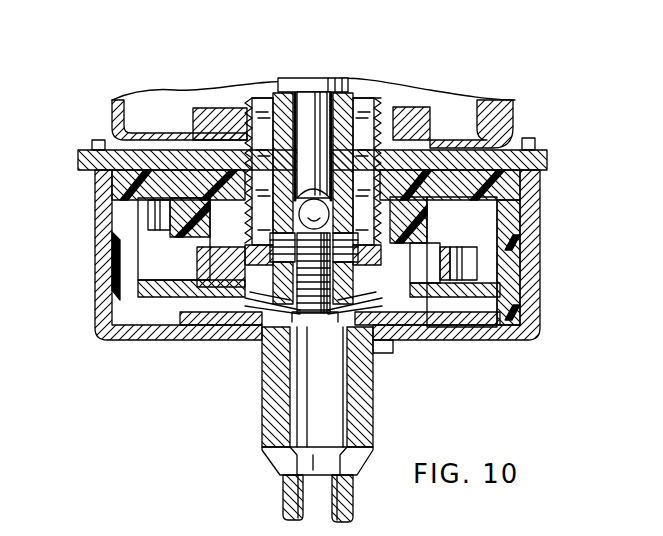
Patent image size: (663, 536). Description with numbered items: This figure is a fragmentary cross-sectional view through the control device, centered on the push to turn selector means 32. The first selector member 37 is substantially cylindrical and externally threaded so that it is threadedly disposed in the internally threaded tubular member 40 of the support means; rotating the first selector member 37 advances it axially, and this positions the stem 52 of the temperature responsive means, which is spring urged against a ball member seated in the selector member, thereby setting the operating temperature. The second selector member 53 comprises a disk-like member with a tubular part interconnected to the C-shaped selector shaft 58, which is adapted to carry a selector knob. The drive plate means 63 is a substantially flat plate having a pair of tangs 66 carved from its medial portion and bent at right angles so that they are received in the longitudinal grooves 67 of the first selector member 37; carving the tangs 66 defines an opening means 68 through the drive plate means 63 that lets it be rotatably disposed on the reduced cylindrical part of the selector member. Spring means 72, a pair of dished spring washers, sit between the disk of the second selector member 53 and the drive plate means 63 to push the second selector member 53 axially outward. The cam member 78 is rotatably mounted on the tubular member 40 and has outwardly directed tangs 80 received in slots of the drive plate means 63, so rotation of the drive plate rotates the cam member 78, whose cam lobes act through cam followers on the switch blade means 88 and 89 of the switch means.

The push to turn selector means 32 is at (392, 360).
The first selector member 37 is at (250, 148).
The tubular member 40 is at (390, 162).
The stem 52 is at (305, 105).
The second selector member 53 is at (410, 338).
The selector shaft 58 is at (283, 503).
The drive plate means 63 is at (245, 316).
The tangs 66 is at (260, 218).
The longitudinal grooves 67 is at (262, 107).
The opening means 68 is at (430, 263).
The spring means 72 is at (280, 318).
The cam member 78 is at (207, 268).
The tangs 80 is at (195, 325).
The switch blade means 88 is at (470, 264).
The switch blade means 89 is at (153, 217).